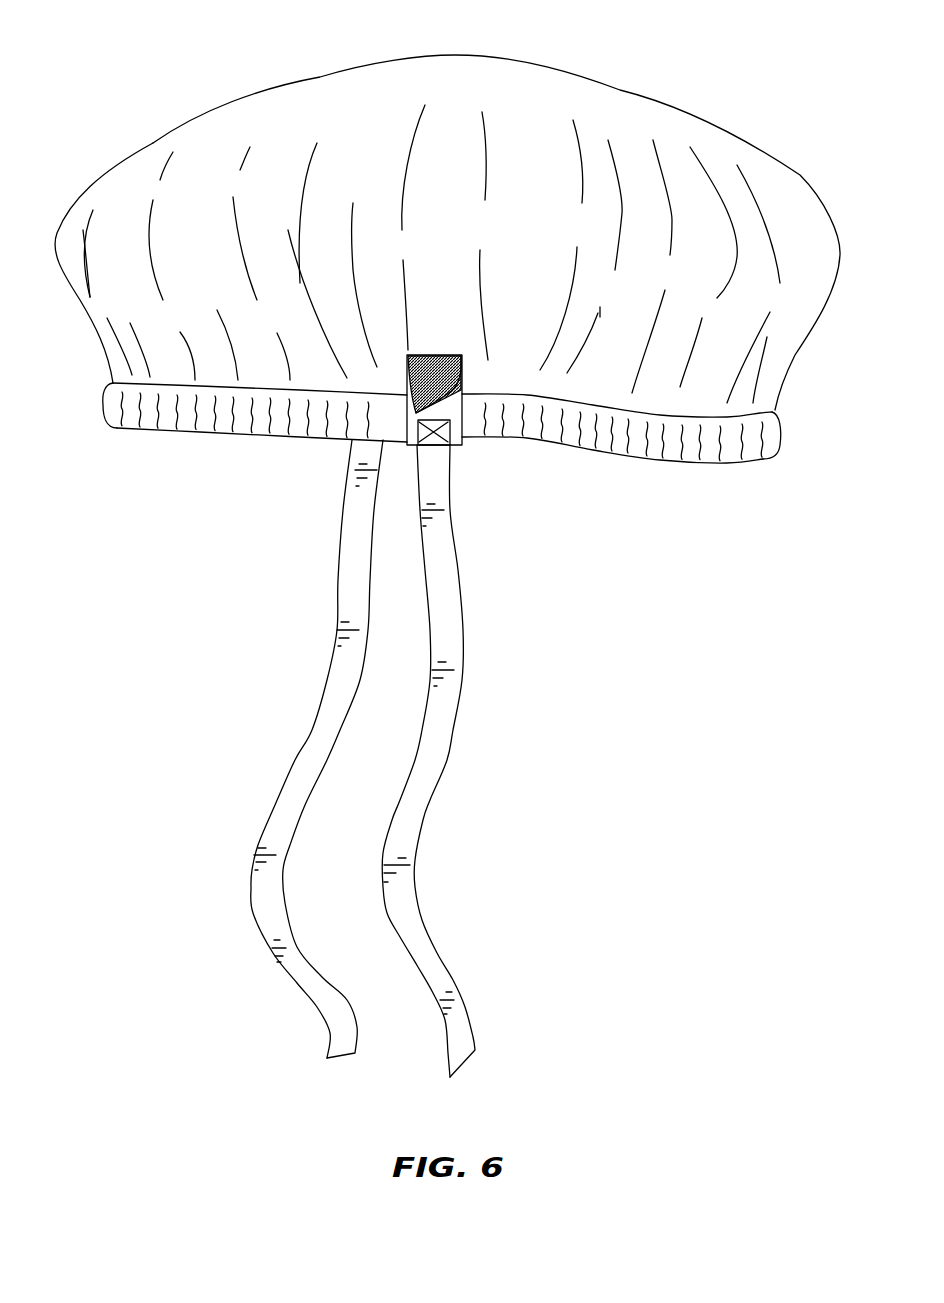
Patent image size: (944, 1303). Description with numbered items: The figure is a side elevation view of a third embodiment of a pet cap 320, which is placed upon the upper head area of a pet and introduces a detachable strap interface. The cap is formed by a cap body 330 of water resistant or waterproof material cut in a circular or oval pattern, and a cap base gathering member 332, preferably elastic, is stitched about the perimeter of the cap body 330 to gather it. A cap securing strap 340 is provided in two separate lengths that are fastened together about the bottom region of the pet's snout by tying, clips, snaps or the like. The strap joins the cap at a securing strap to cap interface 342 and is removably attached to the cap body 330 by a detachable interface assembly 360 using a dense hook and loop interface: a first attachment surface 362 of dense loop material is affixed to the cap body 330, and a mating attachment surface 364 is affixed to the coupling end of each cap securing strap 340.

The pet cap 320 is at (137, 103).
The cap body 330 is at (705, 130).
The cap base gathering member 332 is at (187, 422).
The cap securing strap 340 is at (305, 750).
The securing strap to cap interface 342 is at (460, 450).
The detachable interface assembly 360 is at (455, 406).
The first attachment surface 362 is at (467, 355).
The mating attachment surface 364 is at (427, 355).